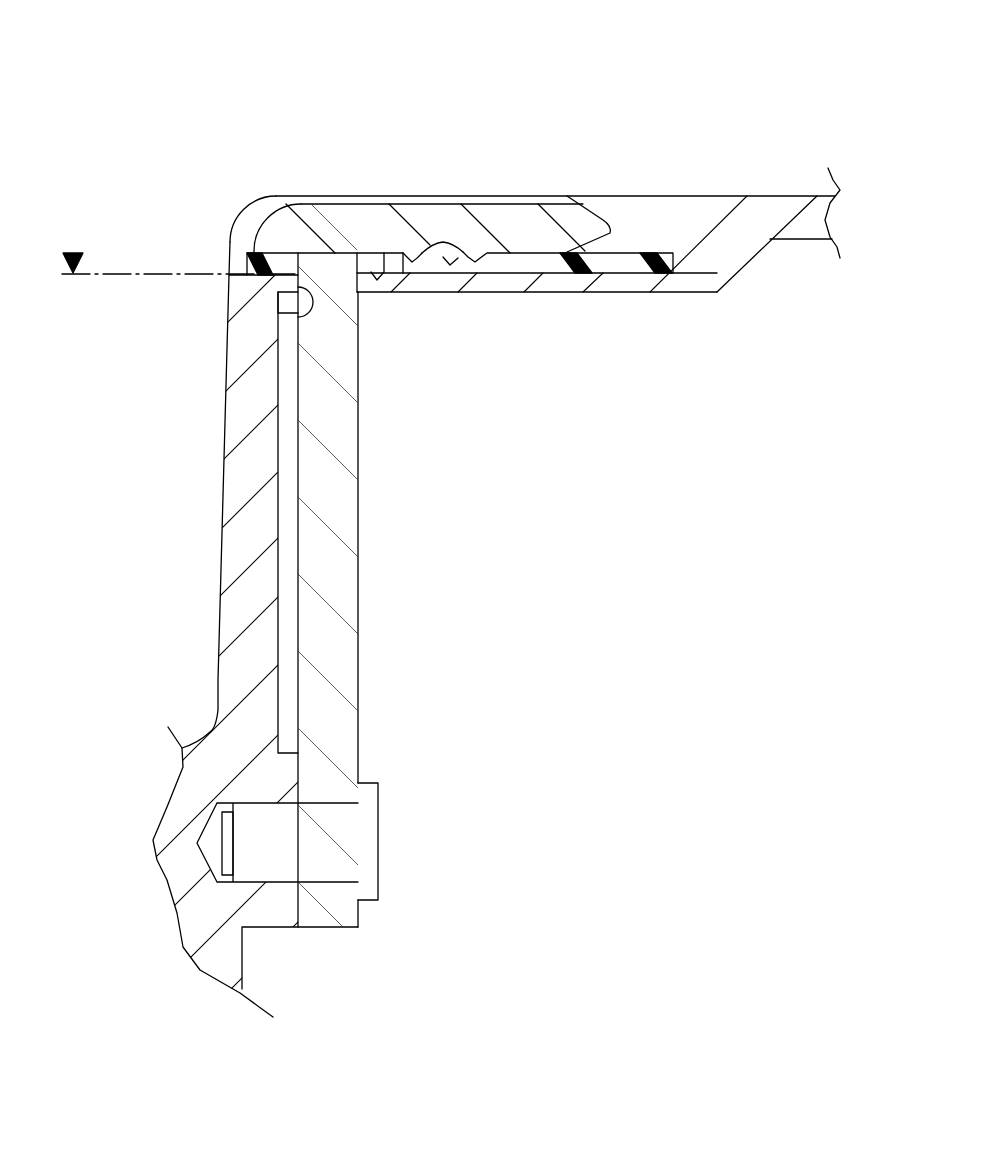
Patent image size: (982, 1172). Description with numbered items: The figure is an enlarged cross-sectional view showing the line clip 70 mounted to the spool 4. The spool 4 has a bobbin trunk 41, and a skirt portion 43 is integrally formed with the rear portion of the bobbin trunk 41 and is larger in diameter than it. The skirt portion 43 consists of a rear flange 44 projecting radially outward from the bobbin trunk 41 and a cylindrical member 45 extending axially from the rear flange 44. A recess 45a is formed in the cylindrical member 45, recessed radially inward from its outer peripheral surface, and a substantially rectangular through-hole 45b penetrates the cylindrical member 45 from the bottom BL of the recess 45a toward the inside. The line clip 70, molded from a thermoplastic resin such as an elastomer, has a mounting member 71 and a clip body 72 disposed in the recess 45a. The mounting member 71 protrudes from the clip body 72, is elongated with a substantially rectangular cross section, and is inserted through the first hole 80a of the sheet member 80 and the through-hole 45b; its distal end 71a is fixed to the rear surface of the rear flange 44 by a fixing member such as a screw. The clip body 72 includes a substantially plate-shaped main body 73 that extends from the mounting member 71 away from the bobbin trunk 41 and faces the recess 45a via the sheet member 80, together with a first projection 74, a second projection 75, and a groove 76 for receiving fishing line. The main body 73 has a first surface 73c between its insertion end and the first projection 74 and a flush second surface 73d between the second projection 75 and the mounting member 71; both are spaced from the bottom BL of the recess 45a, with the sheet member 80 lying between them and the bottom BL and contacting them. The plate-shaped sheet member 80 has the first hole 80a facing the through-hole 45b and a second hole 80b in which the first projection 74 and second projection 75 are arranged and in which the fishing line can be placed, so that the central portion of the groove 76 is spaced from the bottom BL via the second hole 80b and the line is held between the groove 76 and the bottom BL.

The spool 4 is at (190, 553).
The bobbin trunk 41 is at (175, 877).
The skirt portion 43 is at (207, 222).
The rear flange 44 is at (227, 492).
The cylindrical member 45 is at (767, 213).
The recess 45a is at (680, 272).
The through-hole 45b is at (278, 313).
The line clip 70 is at (407, 191).
The mounting member 71 is at (358, 648).
The distal end 71a is at (358, 913).
The clip body 72 is at (273, 200).
The main body 73 is at (523, 220).
The first surface 73c is at (550, 293).
The second surface 73d is at (368, 253).
The first projection 74 is at (473, 253).
The second projection 75 is at (412, 262).
The groove 76 is at (467, 250).
The sheet member 80 is at (635, 252).
The first hole 80a is at (357, 267).
The second hole 80b is at (435, 262).
The bottom of the recess BL is at (176, 247).